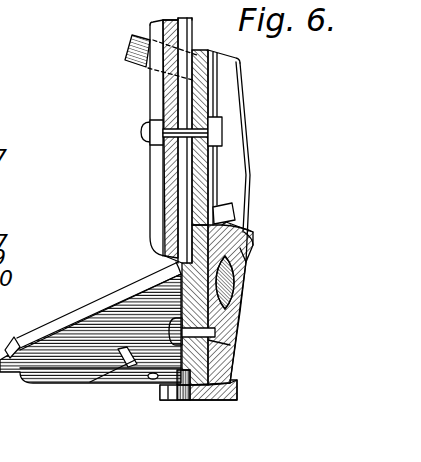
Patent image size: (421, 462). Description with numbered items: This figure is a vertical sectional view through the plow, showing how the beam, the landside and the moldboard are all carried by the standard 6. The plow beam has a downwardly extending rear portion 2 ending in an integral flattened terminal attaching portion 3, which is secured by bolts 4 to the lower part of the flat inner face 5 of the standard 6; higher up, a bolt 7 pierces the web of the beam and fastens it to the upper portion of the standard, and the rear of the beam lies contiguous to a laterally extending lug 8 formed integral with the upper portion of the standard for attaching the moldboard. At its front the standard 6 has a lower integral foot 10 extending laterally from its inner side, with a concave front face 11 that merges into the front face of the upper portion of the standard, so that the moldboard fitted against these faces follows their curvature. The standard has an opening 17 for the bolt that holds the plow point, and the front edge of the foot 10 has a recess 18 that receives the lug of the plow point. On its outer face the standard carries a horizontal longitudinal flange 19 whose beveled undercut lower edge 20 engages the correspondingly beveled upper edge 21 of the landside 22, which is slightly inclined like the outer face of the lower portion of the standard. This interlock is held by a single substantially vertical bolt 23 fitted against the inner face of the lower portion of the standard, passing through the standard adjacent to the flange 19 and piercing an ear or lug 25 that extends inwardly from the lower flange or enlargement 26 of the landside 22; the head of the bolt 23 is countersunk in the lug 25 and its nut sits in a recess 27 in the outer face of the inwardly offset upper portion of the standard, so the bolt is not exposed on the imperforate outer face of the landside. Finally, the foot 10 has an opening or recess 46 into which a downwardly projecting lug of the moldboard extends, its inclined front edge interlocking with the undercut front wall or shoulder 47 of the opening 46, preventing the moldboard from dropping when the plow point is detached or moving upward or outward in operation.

The downwardly extending rear portion 2 is at (168, 95).
The flattened terminal attaching portion 3 is at (181, 291).
The bolts 4 is at (221, 334).
The flat inner face 5 is at (197, 353).
The standard 6 is at (248, 270).
The bolt 7 is at (222, 133).
The laterally extending lug 8 is at (131, 43).
The foot 10 is at (77, 347).
The concave front face 11 is at (93, 308).
The opening 17 is at (147, 375).
The recess 18 is at (9, 368).
The horizontal longitudinal flange 19 is at (241, 228).
The beveled undercut lower face 20 is at (250, 247).
The beveled upper edge 21 is at (233, 262).
The landside 22 is at (216, 331).
The vertical bolt 23 is at (231, 210).
The ear or lug 25 is at (172, 391).
The lower flange or enlargement 26 is at (237, 396).
The recess 27 is at (247, 152).
The opening or recess 46 is at (127, 348).
The undercut front wall or shoulder 47 is at (97, 380).